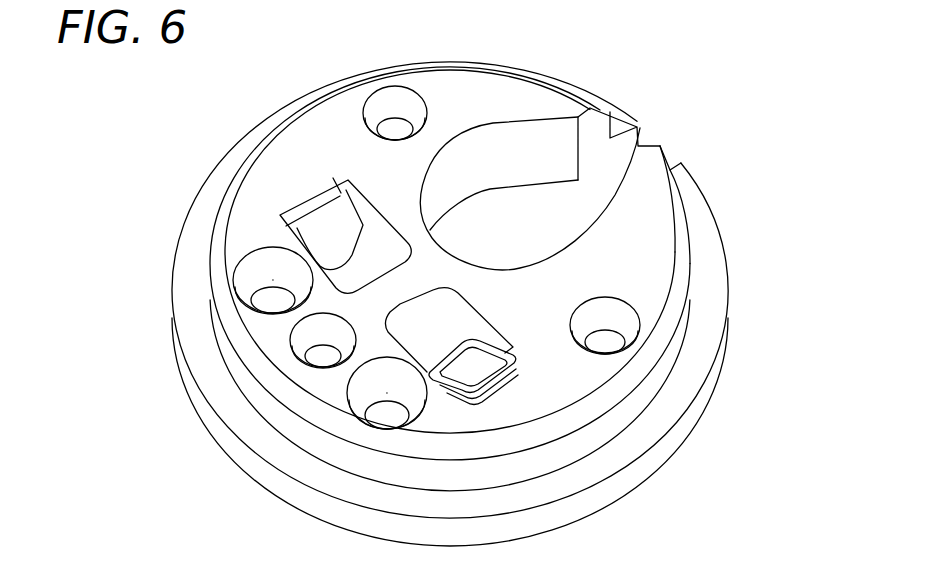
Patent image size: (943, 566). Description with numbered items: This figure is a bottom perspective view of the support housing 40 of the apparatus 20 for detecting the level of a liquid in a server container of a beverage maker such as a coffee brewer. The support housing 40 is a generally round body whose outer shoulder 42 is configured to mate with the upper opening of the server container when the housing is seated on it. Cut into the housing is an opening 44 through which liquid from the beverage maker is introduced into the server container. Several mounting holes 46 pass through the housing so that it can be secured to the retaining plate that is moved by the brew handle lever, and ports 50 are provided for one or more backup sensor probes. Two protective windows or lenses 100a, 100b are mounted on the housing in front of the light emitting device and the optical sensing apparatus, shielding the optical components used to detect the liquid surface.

The apparatus 20 is at (762, 222).
The support housing 40 is at (310, 137).
The shoulder 42 is at (697, 363).
The opening 44 is at (492, 143).
The mounting holes 46 is at (394, 122).
The ports 50 is at (385, 389).
The protective window or lens 100a is at (343, 220).
The protective window or lens 100b is at (475, 357).